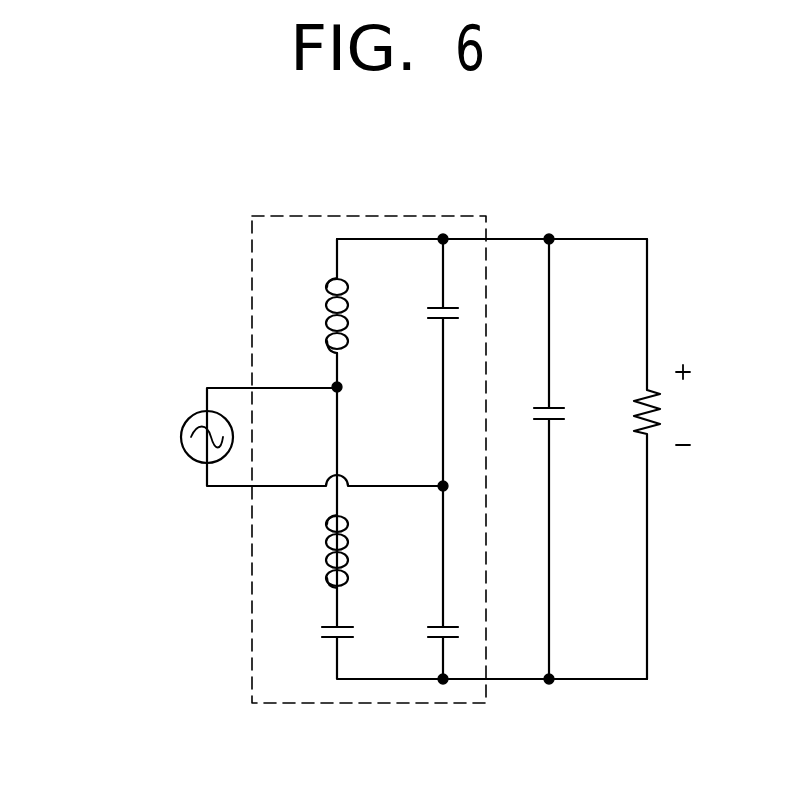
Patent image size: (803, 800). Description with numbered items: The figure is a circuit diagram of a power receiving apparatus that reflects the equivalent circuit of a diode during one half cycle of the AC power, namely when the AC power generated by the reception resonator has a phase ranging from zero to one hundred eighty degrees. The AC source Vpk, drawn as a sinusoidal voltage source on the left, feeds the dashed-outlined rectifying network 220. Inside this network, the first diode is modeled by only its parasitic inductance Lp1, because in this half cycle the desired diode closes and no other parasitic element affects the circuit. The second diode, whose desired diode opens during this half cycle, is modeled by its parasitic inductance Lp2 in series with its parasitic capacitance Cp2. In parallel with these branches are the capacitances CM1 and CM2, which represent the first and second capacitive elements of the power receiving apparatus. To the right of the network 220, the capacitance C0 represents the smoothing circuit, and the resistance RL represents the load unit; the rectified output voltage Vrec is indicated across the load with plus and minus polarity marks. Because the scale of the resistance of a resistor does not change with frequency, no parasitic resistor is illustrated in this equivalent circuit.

The rectifier 220 is at (373, 213).
The parasitic inductance Lp1 is at (311, 315).
The parasitic inductance Lp2 is at (311, 551).
The capacitance of the first capacitive element CM1 is at (418, 316).
The capacitance of the second capacitive element CM2 is at (418, 631).
The parasitic capacitance Cp2 is at (314, 631).
The capacitance of the smoothing circuit C0 is at (530, 459).
The resistance of the load unit RL is at (627, 459).
The rectified voltage Vrec is at (698, 405).
The AC source voltage Vpk is at (233, 437).